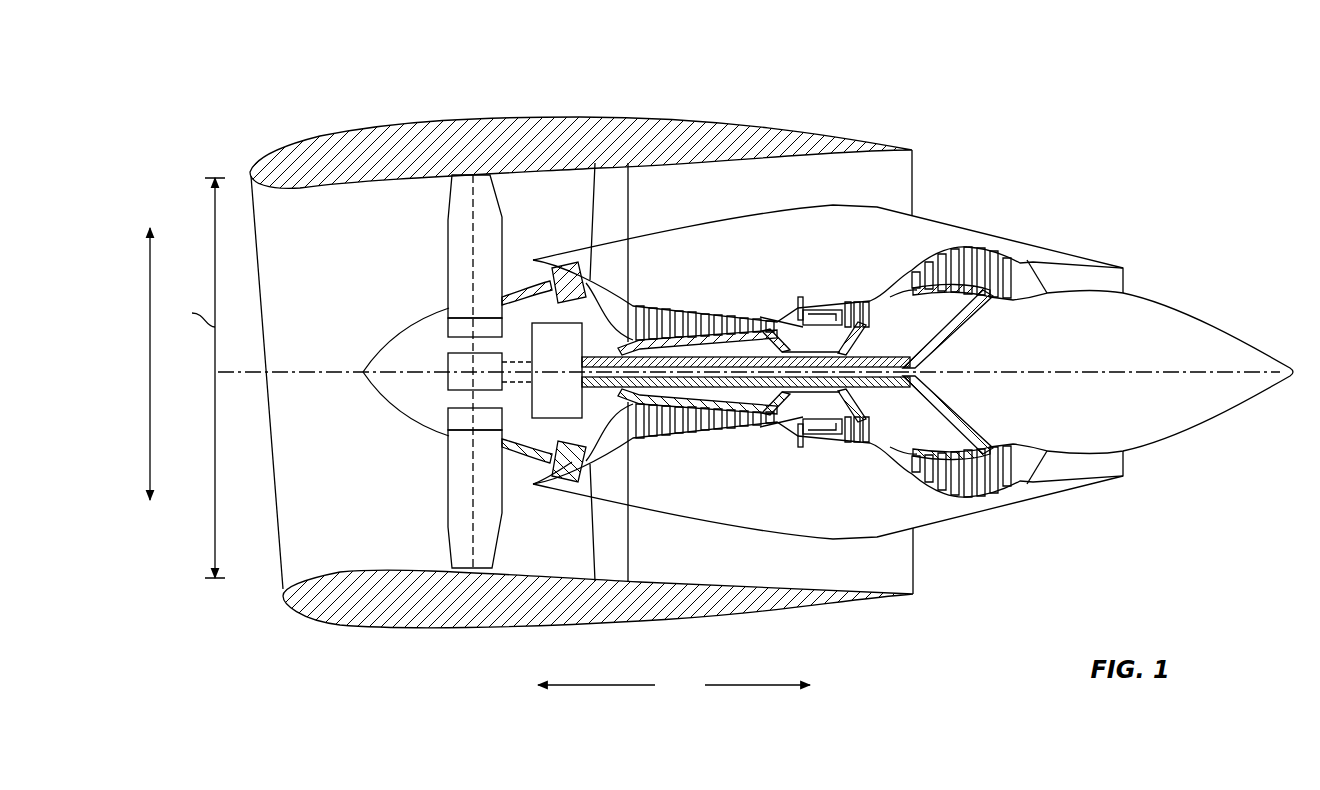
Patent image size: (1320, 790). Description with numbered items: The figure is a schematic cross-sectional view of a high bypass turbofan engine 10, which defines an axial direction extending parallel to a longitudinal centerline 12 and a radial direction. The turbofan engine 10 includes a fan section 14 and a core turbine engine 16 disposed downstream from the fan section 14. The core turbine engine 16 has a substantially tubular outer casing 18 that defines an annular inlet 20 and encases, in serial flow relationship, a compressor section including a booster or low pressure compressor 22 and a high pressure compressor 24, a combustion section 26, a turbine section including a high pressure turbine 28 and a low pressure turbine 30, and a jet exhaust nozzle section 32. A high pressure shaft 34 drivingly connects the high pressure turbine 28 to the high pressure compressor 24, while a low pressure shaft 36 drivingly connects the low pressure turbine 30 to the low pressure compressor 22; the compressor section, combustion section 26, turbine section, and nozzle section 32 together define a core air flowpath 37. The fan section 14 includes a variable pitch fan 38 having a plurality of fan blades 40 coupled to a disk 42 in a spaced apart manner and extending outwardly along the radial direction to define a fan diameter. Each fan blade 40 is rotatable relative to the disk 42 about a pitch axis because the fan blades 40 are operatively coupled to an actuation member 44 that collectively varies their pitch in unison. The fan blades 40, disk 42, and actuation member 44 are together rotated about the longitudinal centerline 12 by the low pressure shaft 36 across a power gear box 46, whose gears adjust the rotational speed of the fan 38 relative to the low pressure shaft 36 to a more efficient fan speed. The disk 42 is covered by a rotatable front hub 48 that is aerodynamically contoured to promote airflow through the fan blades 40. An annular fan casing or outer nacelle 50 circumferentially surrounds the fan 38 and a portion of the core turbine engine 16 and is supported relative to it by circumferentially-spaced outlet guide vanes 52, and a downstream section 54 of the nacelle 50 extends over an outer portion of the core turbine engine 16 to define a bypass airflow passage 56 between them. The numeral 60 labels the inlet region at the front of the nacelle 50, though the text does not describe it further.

The turbofan engine 10 is at (1048, 130).
The longitudinal centerline 12 is at (1070, 372).
The fan section 14 is at (410, 308).
The core turbine engine 16 is at (897, 320).
The outer casing 18 is at (777, 525).
The annular inlet 20 is at (535, 472).
The low pressure compressor 22 is at (595, 447).
The high pressure compressor 24 is at (657, 425).
The combustion section 26 is at (815, 440).
The high pressure turbine 28 is at (937, 423).
The low pressure turbine 30 is at (990, 488).
The jet exhaust nozzle section 32 is at (1045, 470).
The high pressure shaft 34 is at (855, 330).
The low pressure shaft 36 is at (935, 338).
The core air flowpath 37 is at (618, 425).
The variable pitch fan 38 is at (426, 371).
The fan blades 40 is at (447, 513).
The disk 42 is at (447, 325).
The actuation member 44 is at (447, 360).
The power gear box 46 is at (567, 338).
The rotatable front hub 48 is at (373, 387).
The outer nacelle 50 is at (558, 387).
The outlet guide vanes 52 is at (632, 195).
The downstream section of nacelle 54 is at (860, 138).
The bypass airflow passage 56 is at (768, 201).
The inlet 60 is at (258, 570).